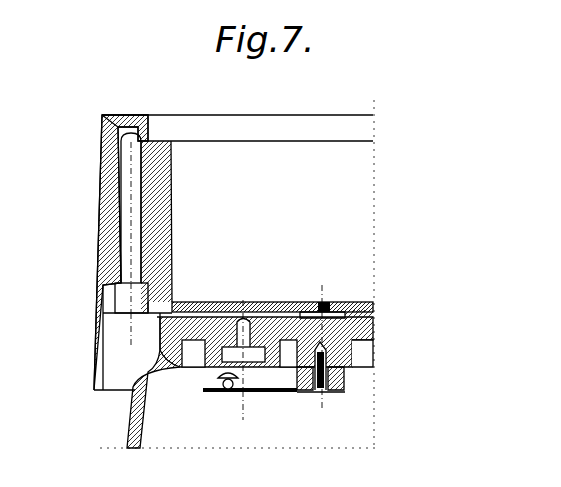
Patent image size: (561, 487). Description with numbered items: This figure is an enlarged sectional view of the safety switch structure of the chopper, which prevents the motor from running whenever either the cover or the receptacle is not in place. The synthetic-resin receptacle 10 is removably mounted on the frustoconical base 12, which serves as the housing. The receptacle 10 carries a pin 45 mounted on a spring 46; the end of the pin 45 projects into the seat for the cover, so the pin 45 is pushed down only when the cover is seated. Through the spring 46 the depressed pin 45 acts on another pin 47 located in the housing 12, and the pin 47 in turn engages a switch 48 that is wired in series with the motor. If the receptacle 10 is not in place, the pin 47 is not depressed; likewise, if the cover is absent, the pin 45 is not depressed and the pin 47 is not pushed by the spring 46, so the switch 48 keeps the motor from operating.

The receptacle 10 is at (108, 220).
The base 12 is at (132, 416).
The pin 45 is at (133, 238).
The spring 46 is at (213, 300).
The pin 47 is at (258, 303).
The switch 48 is at (230, 397).